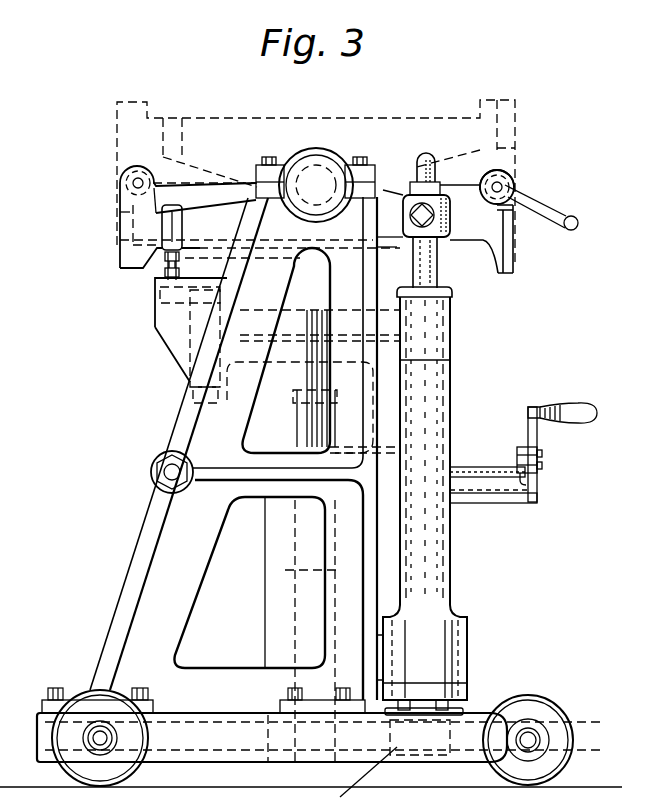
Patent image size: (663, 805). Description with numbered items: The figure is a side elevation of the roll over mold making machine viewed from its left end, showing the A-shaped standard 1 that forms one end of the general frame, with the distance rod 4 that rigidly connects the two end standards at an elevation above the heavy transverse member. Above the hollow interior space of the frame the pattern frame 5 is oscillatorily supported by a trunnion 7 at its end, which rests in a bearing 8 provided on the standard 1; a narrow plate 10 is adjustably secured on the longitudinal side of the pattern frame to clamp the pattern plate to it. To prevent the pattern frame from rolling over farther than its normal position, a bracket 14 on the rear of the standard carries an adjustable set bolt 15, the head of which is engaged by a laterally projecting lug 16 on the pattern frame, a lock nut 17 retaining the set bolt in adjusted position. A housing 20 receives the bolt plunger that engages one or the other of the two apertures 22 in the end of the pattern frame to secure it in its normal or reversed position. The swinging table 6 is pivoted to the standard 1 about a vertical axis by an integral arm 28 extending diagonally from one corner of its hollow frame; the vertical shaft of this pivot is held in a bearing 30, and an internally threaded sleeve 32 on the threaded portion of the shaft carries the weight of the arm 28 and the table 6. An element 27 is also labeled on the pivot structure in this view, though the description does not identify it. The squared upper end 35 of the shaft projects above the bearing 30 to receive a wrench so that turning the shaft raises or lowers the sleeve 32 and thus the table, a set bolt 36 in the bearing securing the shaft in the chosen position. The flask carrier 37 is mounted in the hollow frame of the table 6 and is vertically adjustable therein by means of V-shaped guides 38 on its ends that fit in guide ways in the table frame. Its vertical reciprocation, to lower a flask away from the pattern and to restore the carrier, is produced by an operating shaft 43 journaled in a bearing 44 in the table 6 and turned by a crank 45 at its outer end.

The standard 1 is at (148, 540).
The distance rod 4 is at (164, 468).
The pattern frame 5 is at (128, 225).
The swinging table 6 is at (265, 602).
The trunnion 7 is at (320, 155).
The bearing 8 is at (306, 150).
The narrow plate 10 is at (530, 206).
The bracket 14 is at (162, 335).
The set bolt 15 is at (165, 262).
The lug 16 is at (172, 232).
The lock nut 17 is at (176, 272).
The housing 20 is at (118, 212).
The aperture 22 is at (136, 186).
The head block 27 is at (440, 278).
The arm 28 is at (440, 552).
The bearing 30 is at (450, 230).
The internally threaded sleeve 32 is at (466, 692).
The upper end of shaft 35 is at (436, 170).
The set bolt 36 is at (450, 207).
The flask carrier 37 is at (304, 332).
The V-shaped guide 38 is at (320, 334).
The operating shaft 43 is at (500, 503).
The bearing 44 is at (475, 468).
The crank 45 is at (540, 432).